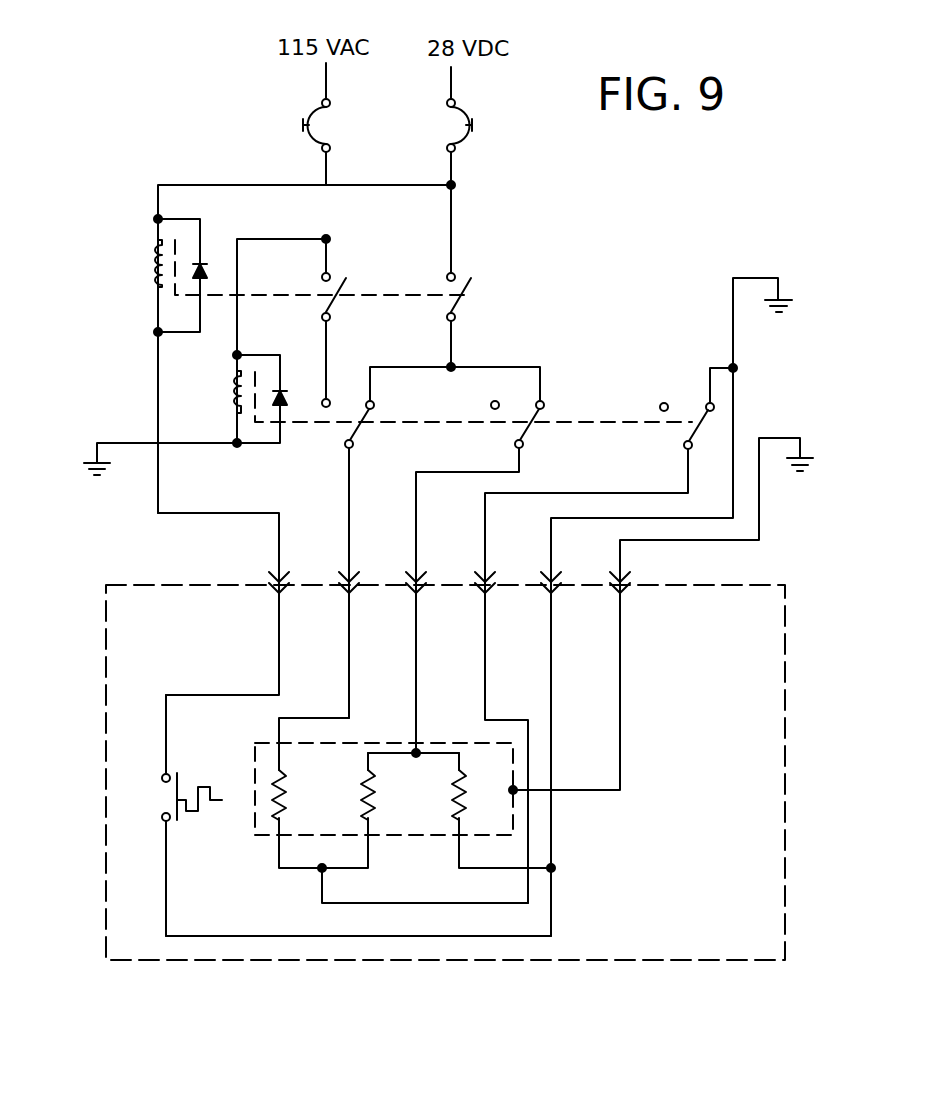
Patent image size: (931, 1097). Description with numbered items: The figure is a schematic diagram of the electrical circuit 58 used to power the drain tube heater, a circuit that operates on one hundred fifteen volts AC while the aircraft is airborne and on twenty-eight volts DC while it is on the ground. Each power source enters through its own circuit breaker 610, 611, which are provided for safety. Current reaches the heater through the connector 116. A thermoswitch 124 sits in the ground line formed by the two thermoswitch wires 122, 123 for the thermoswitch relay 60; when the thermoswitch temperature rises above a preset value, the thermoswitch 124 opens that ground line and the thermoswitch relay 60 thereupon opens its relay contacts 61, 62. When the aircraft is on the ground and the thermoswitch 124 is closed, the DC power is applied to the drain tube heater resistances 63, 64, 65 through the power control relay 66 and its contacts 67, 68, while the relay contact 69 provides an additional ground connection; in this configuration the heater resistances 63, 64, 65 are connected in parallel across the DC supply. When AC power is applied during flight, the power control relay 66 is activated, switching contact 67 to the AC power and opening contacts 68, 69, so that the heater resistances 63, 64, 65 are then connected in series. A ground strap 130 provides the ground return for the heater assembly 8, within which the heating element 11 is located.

The heater assembly 8 is at (105, 658).
The heating element 11 is at (405, 827).
The circuit 58 is at (240, 172).
The thermoswitch relay 60 is at (145, 265).
The relay contact 61 is at (343, 283).
The relay contact 62 is at (468, 290).
The drain tube heater resistance 63 is at (285, 795).
The drain tube heater resistance 64 is at (375, 800).
The drain tube heater resistance 65 is at (479, 784).
The power control relay 66 is at (228, 397).
The contact 67 is at (356, 432).
The contact 68 is at (531, 432).
The relay contact 69 is at (697, 430).
The connector 116 is at (424, 675).
The thermoswitch wire 122 is at (222, 692).
The thermoswitch wire 123 is at (168, 900).
The thermoswitch 124 is at (183, 783).
The ground strap 130 is at (762, 533).
The circuit breaker 610 is at (327, 127).
The circuit breaker 611 is at (470, 113).